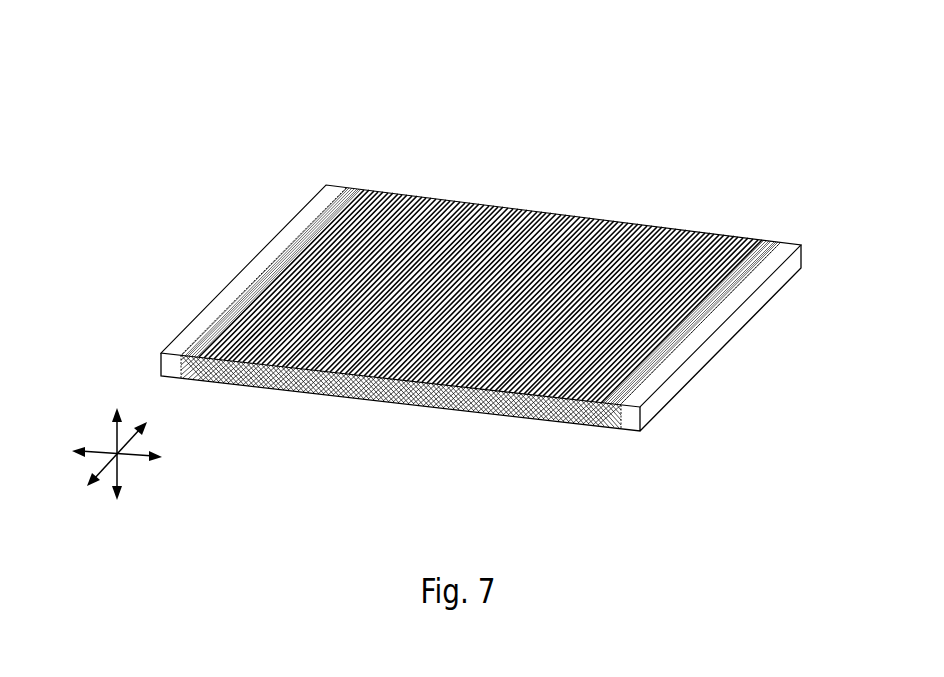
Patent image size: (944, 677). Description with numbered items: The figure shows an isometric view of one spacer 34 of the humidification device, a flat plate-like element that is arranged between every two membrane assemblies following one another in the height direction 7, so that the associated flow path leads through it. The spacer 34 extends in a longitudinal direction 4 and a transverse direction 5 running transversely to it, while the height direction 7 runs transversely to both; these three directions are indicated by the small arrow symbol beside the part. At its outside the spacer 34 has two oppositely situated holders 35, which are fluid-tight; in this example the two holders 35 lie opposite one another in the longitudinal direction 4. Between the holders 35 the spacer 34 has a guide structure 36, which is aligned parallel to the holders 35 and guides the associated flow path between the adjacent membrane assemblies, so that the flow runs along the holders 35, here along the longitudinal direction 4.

The spacer 34 is at (494, 239).
The holder 35 is at (329, 181).
The guide structure 36 is at (548, 210).
The longitudinal direction 4 is at (97, 446).
The transverse direction 5 is at (118, 428).
The height direction 7 is at (108, 428).